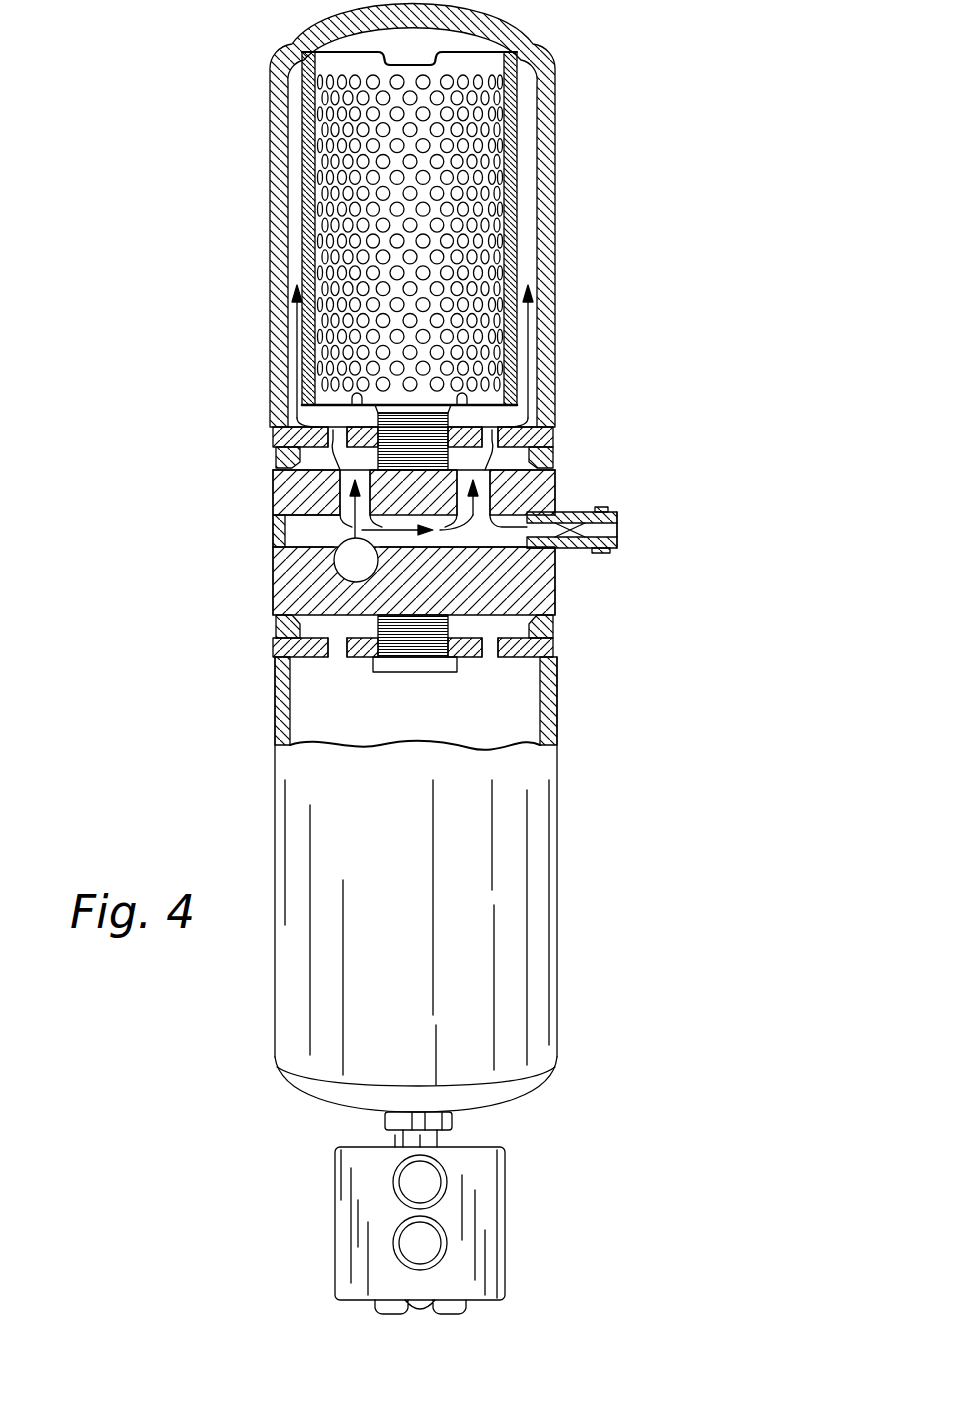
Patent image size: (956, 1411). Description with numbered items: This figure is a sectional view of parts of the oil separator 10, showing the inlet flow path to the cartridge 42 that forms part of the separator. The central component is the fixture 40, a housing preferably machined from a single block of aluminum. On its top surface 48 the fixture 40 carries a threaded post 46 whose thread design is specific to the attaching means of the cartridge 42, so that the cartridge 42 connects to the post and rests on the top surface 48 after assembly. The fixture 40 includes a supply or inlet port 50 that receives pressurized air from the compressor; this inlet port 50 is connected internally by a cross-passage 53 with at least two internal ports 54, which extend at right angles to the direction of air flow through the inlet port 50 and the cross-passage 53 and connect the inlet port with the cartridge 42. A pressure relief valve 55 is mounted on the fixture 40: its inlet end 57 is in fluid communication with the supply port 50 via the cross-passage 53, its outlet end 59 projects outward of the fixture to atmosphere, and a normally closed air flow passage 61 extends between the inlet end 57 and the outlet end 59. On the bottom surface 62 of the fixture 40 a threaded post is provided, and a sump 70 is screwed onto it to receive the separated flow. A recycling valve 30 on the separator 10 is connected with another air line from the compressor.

The oil separator 10 is at (624, 274).
The recycling valve 30 is at (505, 1217).
The fixture 40 is at (266, 474).
The cartridge 42 is at (268, 203).
The threaded post 46 is at (413, 440).
The top surface 48 is at (553, 447).
The inlet port 50 is at (347, 562).
The cross-passage 53 is at (308, 536).
The internal ports 54 is at (333, 493).
The pressure relief valve 55 is at (628, 561).
The inlet end 57 is at (560, 583).
The outlet end 59 is at (613, 512).
The air flow passage 61 is at (603, 548).
The bottom surface 62 is at (487, 620).
The sump 70 is at (543, 925).